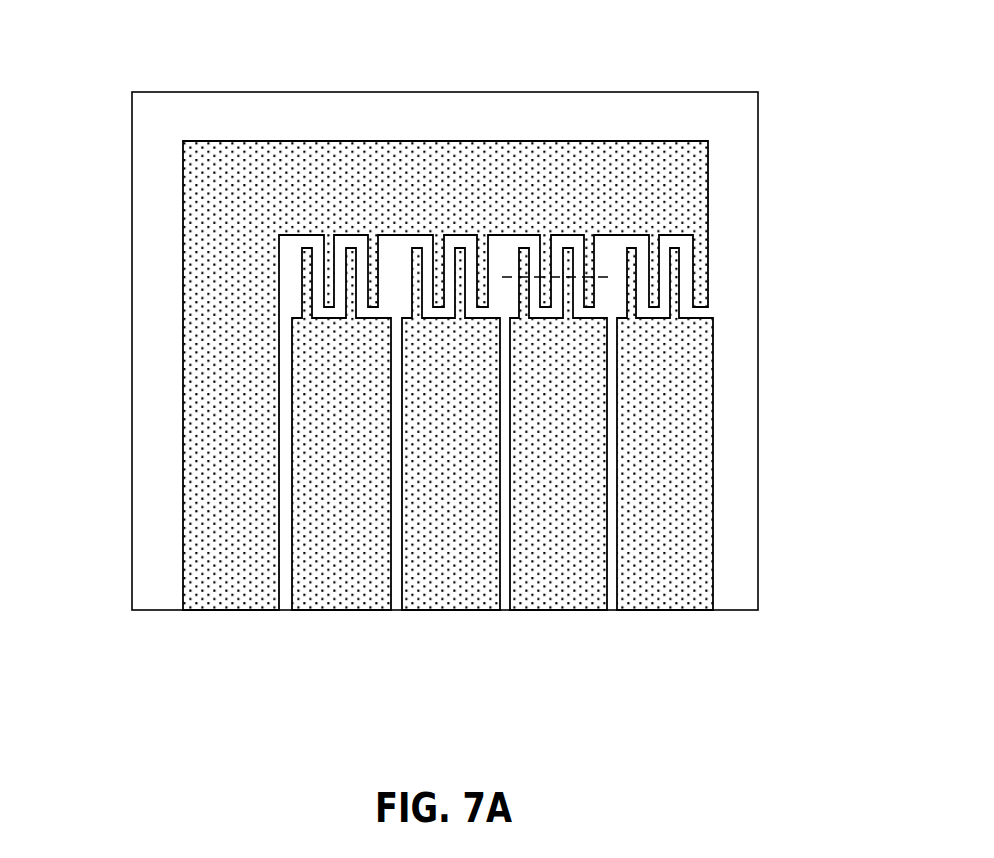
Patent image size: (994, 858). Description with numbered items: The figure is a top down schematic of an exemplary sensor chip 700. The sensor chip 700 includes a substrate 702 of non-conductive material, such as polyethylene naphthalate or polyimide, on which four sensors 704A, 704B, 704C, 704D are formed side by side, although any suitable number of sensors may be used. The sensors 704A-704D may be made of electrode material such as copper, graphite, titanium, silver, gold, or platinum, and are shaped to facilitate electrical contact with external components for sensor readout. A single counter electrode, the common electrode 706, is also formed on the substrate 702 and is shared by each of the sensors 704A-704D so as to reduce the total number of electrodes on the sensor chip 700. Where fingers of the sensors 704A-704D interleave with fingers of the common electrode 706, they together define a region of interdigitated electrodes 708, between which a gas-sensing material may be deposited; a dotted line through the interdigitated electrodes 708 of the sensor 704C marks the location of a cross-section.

The sensor chip 700 is at (475, 374).
The substrate 702 is at (733, 112).
The sensor 704A is at (343, 594).
The sensor 704B is at (449, 594).
The sensor 704C is at (557, 594).
The sensor 704D is at (666, 594).
The common electrode 706 is at (202, 473).
The interdigitated electrodes 708 is at (723, 321).